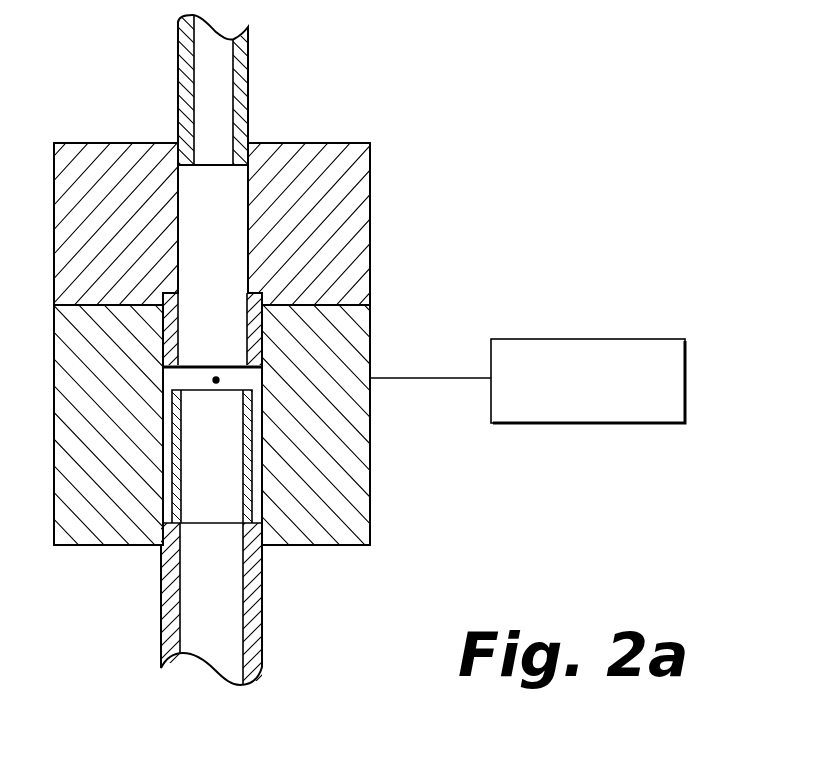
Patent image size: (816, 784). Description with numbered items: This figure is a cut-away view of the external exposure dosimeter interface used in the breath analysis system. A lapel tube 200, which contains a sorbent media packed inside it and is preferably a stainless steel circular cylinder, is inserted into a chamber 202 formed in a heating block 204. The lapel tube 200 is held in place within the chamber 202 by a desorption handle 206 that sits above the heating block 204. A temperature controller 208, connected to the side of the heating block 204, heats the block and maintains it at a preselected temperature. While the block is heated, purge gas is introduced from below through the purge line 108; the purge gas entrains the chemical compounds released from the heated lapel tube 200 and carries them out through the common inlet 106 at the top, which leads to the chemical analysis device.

The common inlet 106 is at (285, 97).
The gas purge line 108 is at (285, 615).
The lapel tube 200 is at (257, 445).
The chamber 202 is at (216, 380).
The heating block 204 is at (370, 505).
The desorption handle 206 is at (370, 192).
The temperature controller 208 is at (605, 339).